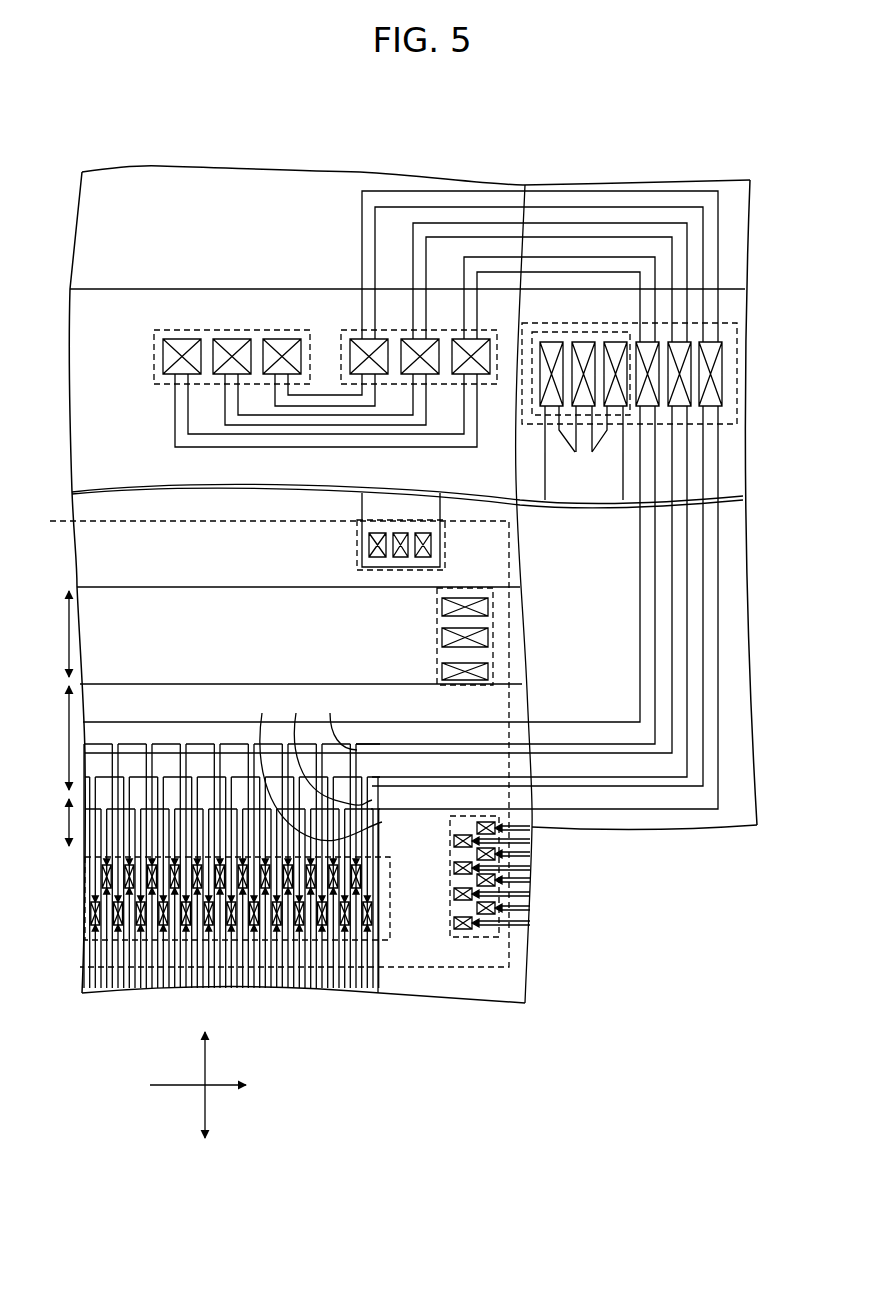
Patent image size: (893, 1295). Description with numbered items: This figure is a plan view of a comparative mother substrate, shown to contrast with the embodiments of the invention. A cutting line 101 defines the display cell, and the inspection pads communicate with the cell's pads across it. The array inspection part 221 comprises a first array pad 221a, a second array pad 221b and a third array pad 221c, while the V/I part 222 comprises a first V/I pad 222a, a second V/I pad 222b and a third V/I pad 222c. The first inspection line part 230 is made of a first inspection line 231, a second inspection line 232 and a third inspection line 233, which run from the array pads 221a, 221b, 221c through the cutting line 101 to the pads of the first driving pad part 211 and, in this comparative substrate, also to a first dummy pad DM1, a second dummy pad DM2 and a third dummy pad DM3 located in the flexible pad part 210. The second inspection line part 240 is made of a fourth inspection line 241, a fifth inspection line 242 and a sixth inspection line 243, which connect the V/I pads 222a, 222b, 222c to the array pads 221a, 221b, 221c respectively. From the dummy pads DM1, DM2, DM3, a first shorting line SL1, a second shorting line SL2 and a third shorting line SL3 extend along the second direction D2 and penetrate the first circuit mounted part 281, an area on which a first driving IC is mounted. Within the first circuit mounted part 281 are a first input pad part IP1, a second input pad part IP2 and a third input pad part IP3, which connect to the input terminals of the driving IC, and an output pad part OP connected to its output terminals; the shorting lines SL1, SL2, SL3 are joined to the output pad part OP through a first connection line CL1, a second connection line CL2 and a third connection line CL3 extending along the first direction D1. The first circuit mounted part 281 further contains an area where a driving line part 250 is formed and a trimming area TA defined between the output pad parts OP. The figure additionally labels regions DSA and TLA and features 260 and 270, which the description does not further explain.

The cutting line 101 is at (100, 288).
The flexible pad part 210 is at (730, 323).
The first driving pad part 211 is at (558, 332).
The array inspection part 221 is at (409, 386).
The first array pad 221a is at (381, 378).
The second array pad 221b is at (429, 378).
The third array pad 221c is at (480, 378).
The V/I part 222 is at (204, 344).
The first V/I pad 222a is at (283, 339).
The second V/I pad 222b is at (233, 339).
The third V/I pad 222c is at (182, 339).
The first inspection line part 230 is at (540, 230).
The first inspection line 231 is at (475, 197).
The second inspection line 232 is at (470, 233).
The third inspection line 233 is at (470, 267).
The second inspection line part 240 is at (326, 442).
The fourth inspection line 241 is at (278, 406).
The fifth inspection line 242 is at (315, 425).
The sixth inspection line 243 is at (255, 475).
The driving line part 250 is at (242, 587).
The inspection pad portion 260 is at (425, 531).
The inspection pads 270 is at (522, 892).
The first circuit mounted part 281 is at (152, 522).
The first dummy pad DM1 is at (711, 406).
The second dummy pad DM2 is at (680, 406).
The third dummy pad DM3 is at (648, 406).
The first shorting line SL1 is at (707, 531).
The second shorting line SL2 is at (678, 551).
The third shorting line SL3 is at (643, 571).
The first input pad part IP1 is at (437, 611).
The second input pad part IP2 is at (447, 541).
The third input pad part IP3 is at (538, 822).
The first connection line CL1 is at (309, 767).
The second connection line CL2 is at (323, 749).
The third connection line CL3 is at (335, 721).
The dummy sensing area DSA is at (50, 634).
The trace line area TLA is at (51, 738).
The trimming area TA is at (56, 822).
The output pad part OP is at (100, 938).
The first direction D1 is at (205, 1101).
The second direction D2 is at (219, 1086).